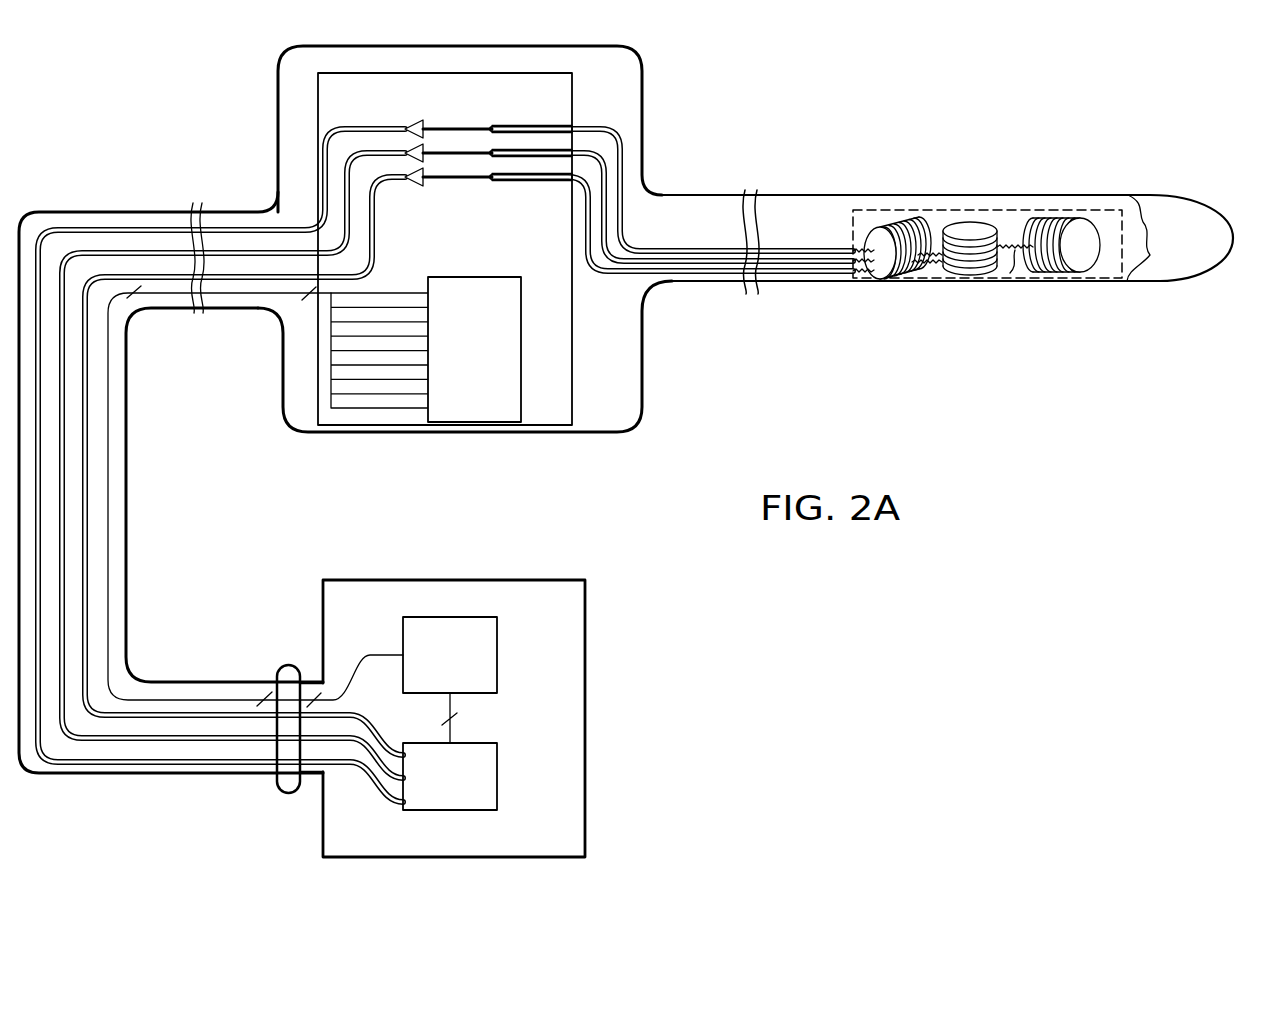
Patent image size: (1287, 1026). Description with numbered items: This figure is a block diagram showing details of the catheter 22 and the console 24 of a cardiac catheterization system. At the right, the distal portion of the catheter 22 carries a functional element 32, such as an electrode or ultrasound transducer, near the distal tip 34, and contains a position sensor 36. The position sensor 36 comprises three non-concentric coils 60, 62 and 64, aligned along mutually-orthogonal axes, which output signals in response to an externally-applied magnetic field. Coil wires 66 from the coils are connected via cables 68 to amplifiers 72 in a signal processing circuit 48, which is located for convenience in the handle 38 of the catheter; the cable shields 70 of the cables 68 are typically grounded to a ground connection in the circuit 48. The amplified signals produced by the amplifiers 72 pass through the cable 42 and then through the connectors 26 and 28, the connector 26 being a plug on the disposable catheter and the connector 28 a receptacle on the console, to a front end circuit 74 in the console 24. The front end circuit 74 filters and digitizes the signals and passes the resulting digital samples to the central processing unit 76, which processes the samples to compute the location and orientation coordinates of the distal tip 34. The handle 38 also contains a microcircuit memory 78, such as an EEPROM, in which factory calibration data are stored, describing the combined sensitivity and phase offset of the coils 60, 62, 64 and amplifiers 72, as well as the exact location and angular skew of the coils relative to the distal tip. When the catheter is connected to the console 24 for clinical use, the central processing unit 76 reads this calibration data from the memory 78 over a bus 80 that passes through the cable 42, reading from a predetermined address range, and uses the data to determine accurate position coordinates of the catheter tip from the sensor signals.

The catheter 22 is at (918, 194).
The control console 24 is at (585, 705).
The connector 26 is at (279, 668).
The connector 28 is at (313, 680).
The functional element 32 is at (1166, 283).
The distal tip 34 is at (1232, 228).
The position sensor 36 is at (1048, 209).
The handle 38 is at (643, 377).
The cable 42 is at (127, 493).
The signal processing circuit 48 is at (317, 115).
The coil 60 is at (1040, 272).
The coil 62 is at (958, 274).
The coil 64 is at (883, 262).
The coil wires 66 is at (850, 283).
The cables 68 is at (590, 193).
The cable shields 70 is at (523, 172).
The amplifiers 72 is at (425, 170).
The front end circuit 74 is at (497, 764).
The central processing unit 76 is at (497, 637).
The microcircuit memory 78 is at (521, 388).
The bus 80 is at (286, 300).